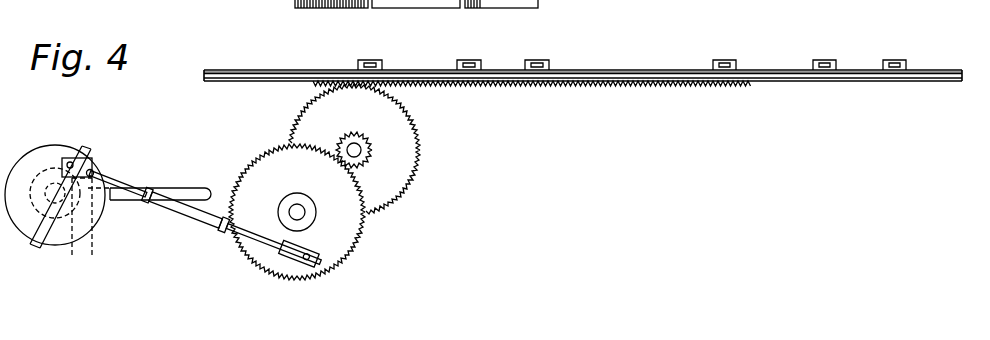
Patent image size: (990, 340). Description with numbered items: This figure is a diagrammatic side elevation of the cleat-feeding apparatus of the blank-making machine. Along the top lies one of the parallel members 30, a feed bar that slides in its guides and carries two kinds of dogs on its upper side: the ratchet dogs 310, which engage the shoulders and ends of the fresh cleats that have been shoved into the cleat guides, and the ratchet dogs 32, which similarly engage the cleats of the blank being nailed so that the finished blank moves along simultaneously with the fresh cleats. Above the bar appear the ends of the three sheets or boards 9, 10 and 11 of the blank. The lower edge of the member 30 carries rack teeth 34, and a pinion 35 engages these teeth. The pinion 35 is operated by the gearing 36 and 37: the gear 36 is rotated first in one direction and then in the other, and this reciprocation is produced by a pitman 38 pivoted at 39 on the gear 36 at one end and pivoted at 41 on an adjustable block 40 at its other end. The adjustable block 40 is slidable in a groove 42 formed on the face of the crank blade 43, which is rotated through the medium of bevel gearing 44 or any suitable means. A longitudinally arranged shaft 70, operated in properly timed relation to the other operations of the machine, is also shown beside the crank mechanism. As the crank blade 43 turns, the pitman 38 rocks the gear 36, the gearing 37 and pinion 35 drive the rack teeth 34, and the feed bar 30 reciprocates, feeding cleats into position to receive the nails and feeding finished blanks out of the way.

The sheet or board 9 is at (347, 3).
The sheet or board 10 is at (414, 2).
The sheet or board 11 is at (493, 2).
The parallel member 30 is at (246, 69).
The ratchet dog 32 is at (371, 61).
The ratchet dog 310 is at (727, 60).
The rack teeth 34 is at (590, 86).
The pinion 35 is at (412, 155).
The gear 36 is at (353, 222).
The gearing 37 is at (368, 156).
The pitman 38 is at (230, 233).
The pivot 39 is at (318, 268).
The adjustable block 40 is at (72, 162).
The pivot 41 is at (88, 168).
The groove 42 is at (43, 243).
The crank blade 43 is at (103, 222).
The bevel gearing 44 is at (78, 243).
The shaft 70 is at (184, 186).